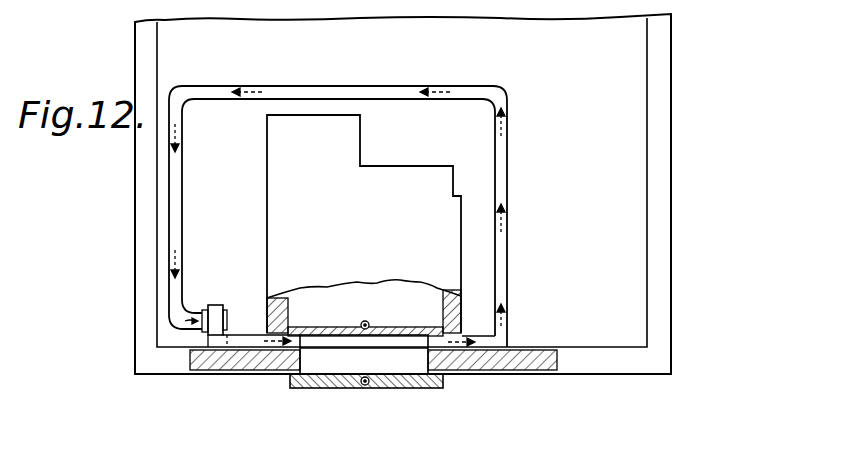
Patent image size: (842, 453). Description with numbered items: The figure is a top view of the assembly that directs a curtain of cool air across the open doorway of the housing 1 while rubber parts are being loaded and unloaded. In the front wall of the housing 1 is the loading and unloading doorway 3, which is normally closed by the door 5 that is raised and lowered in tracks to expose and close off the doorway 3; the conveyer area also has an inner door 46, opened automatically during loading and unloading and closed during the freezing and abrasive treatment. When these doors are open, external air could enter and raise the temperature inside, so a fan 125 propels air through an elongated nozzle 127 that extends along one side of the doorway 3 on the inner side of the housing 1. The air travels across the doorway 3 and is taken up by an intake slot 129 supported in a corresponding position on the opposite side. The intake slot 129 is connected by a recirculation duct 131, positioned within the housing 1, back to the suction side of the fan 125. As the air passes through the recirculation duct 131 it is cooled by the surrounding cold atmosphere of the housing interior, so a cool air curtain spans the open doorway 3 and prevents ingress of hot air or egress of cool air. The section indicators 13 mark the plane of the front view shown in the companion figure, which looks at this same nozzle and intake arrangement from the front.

The housing 1 is at (672, 262).
The loading and unloading doorway 3 is at (323, 372).
The door 5 is at (433, 389).
The section line 13- 13 is at (93, 262).
The door 46 is at (333, 326).
The fan 125 is at (213, 305).
The elongated nozzle 127 is at (257, 338).
The intake slot 129 is at (437, 332).
The recirculation duct 131 is at (508, 250).